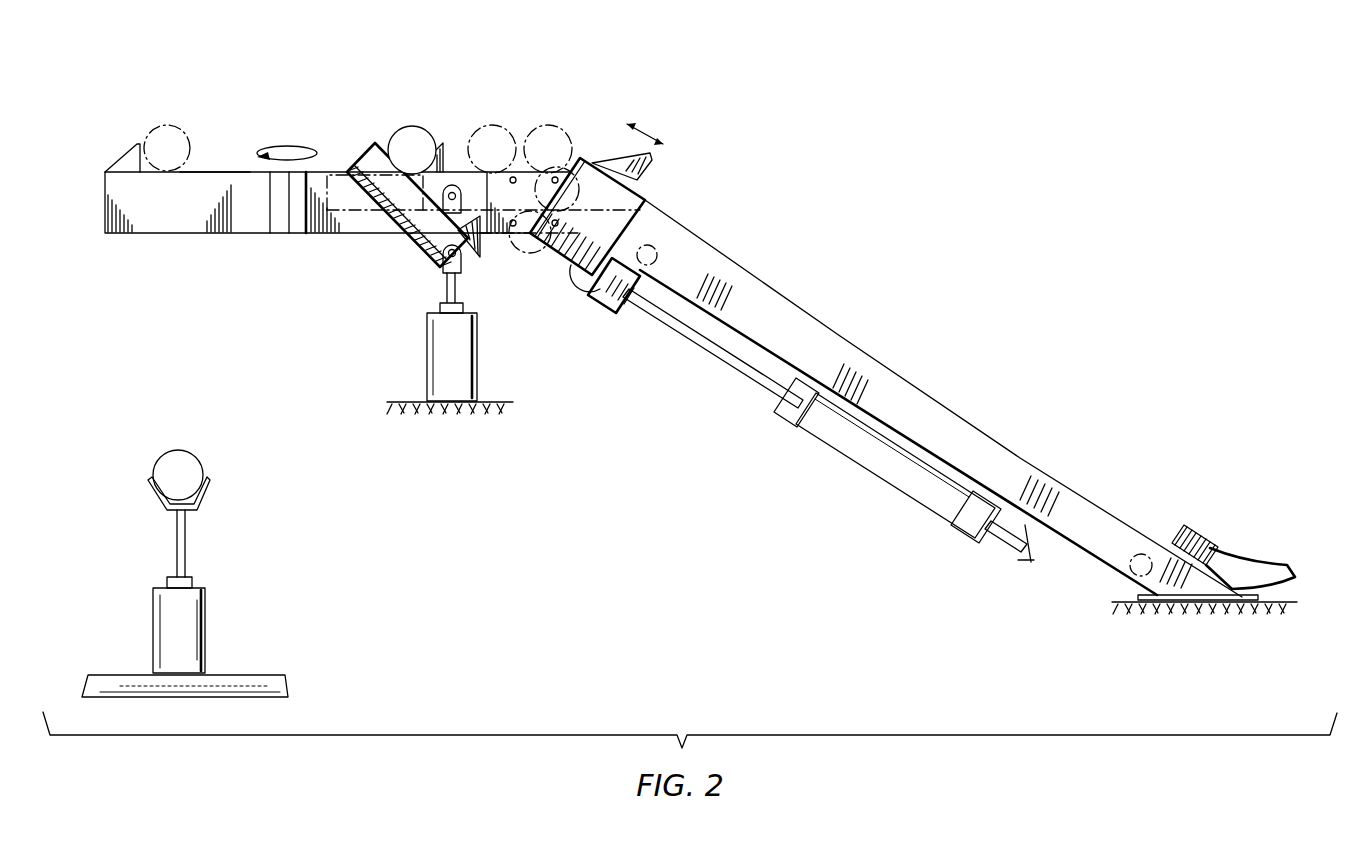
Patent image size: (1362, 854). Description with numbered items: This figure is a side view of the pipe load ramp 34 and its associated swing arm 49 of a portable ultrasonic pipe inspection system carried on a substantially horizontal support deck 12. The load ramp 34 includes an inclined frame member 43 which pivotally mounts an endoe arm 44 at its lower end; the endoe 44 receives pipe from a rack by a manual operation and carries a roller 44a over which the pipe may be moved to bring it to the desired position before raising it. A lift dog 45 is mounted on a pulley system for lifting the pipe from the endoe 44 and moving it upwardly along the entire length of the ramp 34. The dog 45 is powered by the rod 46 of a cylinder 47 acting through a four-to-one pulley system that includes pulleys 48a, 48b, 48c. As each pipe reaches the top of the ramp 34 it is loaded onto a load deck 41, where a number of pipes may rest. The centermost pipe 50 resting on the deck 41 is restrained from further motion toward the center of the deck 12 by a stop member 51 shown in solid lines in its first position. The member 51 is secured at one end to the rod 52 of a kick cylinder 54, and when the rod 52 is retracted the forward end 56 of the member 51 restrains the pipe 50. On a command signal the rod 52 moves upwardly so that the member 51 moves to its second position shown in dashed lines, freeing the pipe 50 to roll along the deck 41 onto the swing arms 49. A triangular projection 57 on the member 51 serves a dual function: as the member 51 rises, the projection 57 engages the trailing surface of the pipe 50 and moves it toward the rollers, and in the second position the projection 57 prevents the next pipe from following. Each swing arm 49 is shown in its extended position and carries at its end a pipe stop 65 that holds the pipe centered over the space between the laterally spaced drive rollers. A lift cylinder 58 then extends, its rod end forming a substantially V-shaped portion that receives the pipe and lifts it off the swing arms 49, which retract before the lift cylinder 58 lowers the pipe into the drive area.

The support deck 12 is at (263, 673).
The load ramp 34 is at (968, 407).
The load deck 41 is at (331, 172).
The inclined frame member 43 is at (978, 426).
The endoe arm 44 is at (1267, 563).
The roller 44a is at (1200, 538).
The lift dog 45 is at (648, 186).
The rod 46 is at (741, 376).
The cylinder 47 is at (870, 474).
The pulley 48a is at (657, 262).
The pulley 48b is at (529, 258).
The pulley 48c is at (640, 210).
The swing arm 49 is at (211, 172).
The pipe 50 is at (410, 126).
The stop member 51 is at (352, 212).
The rod 52 is at (440, 292).
The kick cylinder 54 is at (427, 362).
The forward end 56 is at (375, 143).
The triangular projection 57 is at (456, 143).
The lift cylinder 58 is at (205, 623).
The pipe stop 65 is at (133, 143).